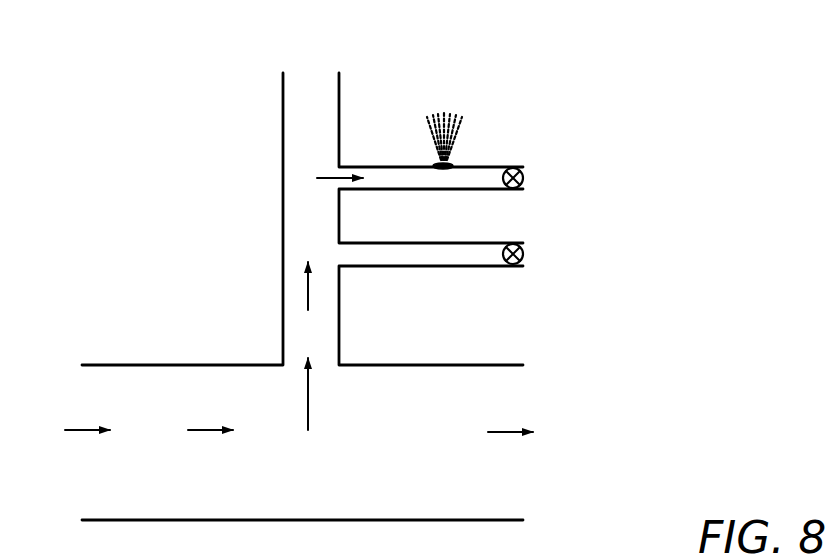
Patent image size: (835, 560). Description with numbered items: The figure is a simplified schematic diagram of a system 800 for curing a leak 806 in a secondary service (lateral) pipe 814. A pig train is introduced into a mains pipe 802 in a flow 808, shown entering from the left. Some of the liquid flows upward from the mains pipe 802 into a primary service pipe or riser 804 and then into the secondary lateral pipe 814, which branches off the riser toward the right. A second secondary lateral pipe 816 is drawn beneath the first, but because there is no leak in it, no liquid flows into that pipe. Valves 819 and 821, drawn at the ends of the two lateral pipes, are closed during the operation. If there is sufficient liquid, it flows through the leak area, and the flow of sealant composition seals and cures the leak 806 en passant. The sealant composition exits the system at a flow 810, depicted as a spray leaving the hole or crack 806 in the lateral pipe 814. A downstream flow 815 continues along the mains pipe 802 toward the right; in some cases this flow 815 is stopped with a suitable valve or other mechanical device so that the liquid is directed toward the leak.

The system 800 is at (740, 72).
The mains pipe 802 is at (408, 365).
The primary service pipe or riser 804 is at (282, 232).
The leak 806 is at (453, 164).
The flow 808 is at (65, 433).
The flow 810 is at (446, 124).
The secondary service (lateral) pipe 814 is at (388, 166).
The flow 815 is at (533, 433).
The secondary lateral pipe 816 is at (405, 243).
The valve 819 is at (524, 175).
The valve 821 is at (524, 251).